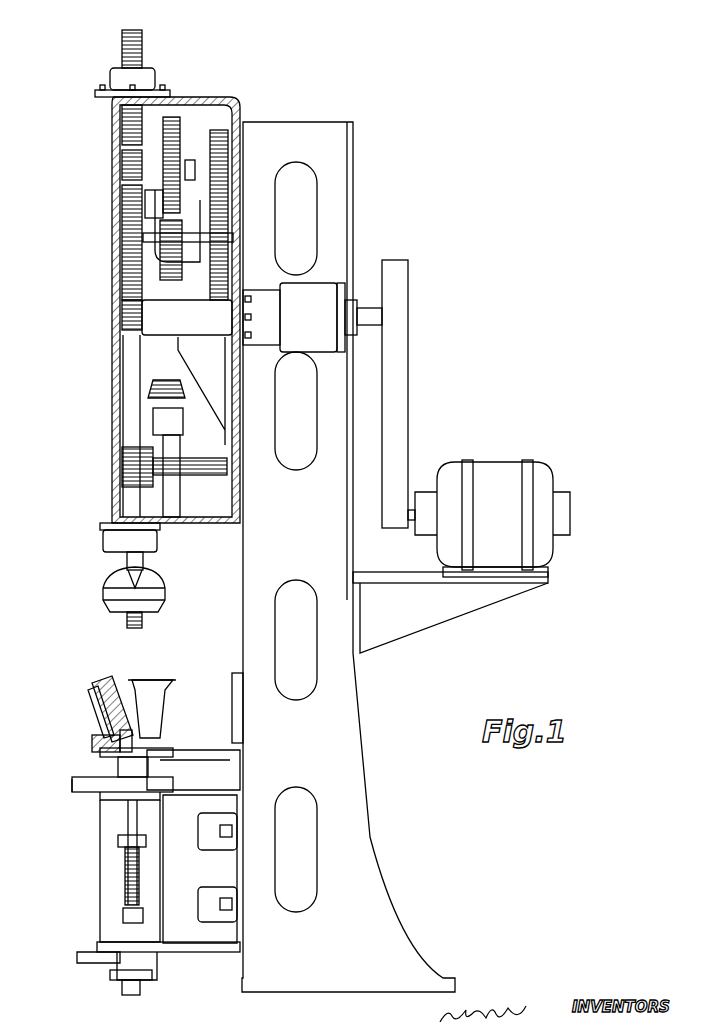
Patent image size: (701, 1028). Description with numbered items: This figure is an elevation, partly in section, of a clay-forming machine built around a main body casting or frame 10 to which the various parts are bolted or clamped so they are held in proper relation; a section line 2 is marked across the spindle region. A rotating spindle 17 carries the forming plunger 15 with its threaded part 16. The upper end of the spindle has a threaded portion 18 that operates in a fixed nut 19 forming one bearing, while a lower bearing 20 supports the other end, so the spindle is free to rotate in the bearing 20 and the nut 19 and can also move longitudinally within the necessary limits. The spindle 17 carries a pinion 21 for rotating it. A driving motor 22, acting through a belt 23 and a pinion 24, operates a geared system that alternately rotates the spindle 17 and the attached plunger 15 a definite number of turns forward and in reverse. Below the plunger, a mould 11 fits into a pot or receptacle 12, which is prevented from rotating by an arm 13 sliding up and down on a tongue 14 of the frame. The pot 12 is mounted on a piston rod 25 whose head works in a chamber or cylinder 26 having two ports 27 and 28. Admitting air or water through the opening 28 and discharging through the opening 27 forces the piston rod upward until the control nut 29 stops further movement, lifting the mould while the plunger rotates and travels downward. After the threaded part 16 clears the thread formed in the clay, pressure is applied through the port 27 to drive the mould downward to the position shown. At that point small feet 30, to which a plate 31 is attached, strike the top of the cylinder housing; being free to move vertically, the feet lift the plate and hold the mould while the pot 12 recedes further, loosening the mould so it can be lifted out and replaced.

The section line 2- 2 is at (150, 17).
The main body casting or frame 10 is at (363, 846).
The mould 11 is at (92, 683).
The pot or receptacle 12 is at (100, 712).
The arm 13 is at (193, 750).
The tongue 14 is at (238, 710).
The forming plunger 15 is at (110, 596).
The threaded part 16 is at (142, 620).
The rotating spindle 17 is at (133, 380).
The threaded portion 18 is at (142, 50).
The fixed nut 19 is at (143, 80).
The lower bearing 20 is at (120, 538).
The pinion 21 is at (138, 464).
The driving motor 22 is at (500, 475).
The belt 23 is at (402, 407).
The pinion 24 is at (118, 340).
The piston rod 25 is at (100, 757).
The chamber or cylinder 26 is at (115, 873).
The port or opening 27 is at (82, 784).
The port or opening 28 is at (92, 958).
The control nut 29 is at (123, 916).
The feet 30 is at (92, 741).
The plate 31 is at (148, 730).